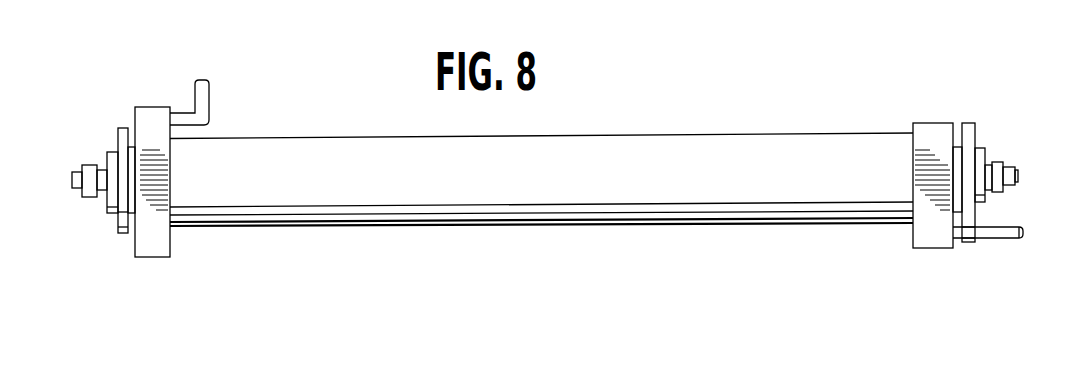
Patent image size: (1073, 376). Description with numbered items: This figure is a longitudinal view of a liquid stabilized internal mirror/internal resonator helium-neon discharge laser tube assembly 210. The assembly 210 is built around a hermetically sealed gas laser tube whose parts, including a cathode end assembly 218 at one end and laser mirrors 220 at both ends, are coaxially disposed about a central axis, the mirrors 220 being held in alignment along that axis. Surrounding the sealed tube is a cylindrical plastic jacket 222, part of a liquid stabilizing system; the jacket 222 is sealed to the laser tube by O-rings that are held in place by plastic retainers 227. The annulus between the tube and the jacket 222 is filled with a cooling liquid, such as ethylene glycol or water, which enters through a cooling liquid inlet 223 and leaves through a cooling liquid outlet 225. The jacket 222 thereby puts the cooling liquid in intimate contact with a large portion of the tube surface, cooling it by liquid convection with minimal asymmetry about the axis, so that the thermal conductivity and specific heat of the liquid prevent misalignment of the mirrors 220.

The liquid stabilized internal mirror/internal resonator helium-neon discharge laser 210 is at (786, 124).
The cathode end assembly 218 is at (980, 143).
The laser mirrors 220 is at (74, 179).
The cylindrical plastic jacket 222 is at (568, 176).
The cooling liquid inlet 223 is at (995, 240).
The cooling liquid outlet 225 is at (210, 110).
The plastic retainers 227 is at (118, 222).